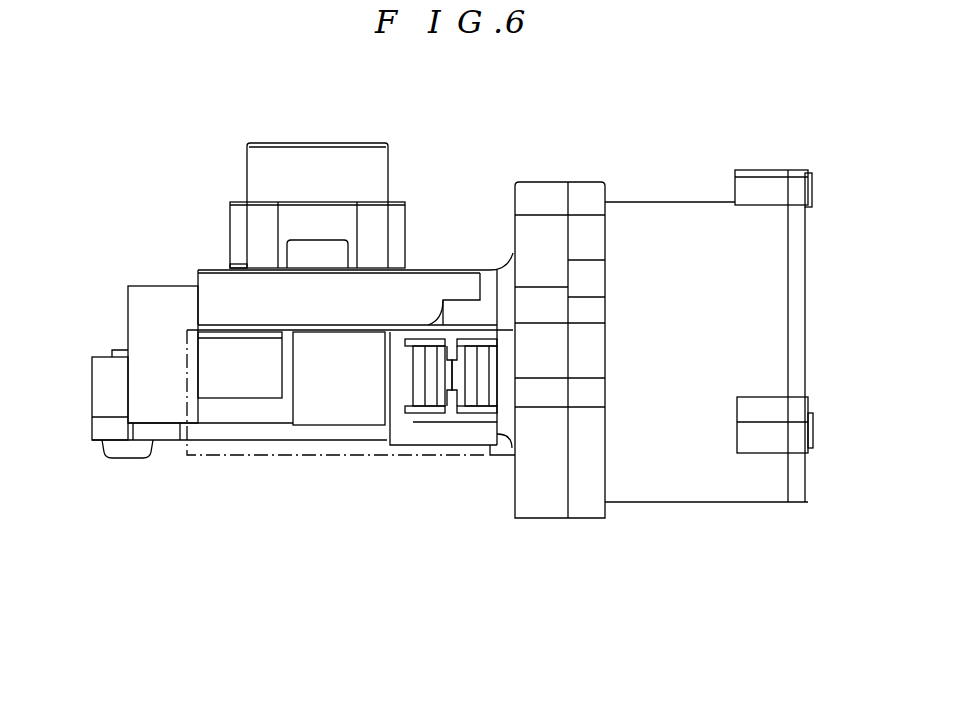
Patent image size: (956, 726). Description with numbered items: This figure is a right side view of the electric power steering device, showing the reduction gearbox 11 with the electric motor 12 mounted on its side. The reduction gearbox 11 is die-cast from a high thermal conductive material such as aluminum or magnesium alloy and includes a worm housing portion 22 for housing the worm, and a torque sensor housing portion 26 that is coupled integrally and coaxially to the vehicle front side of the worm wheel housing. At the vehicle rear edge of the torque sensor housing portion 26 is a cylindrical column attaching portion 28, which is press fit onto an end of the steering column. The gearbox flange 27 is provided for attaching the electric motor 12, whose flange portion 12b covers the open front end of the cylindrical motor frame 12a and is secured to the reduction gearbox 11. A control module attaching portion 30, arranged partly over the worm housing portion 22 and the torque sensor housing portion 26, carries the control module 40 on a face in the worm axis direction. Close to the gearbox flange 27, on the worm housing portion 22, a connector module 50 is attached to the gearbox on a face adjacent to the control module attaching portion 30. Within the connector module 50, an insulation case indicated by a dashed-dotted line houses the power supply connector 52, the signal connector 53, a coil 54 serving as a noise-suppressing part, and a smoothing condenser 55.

The reduction gearbox 11 is at (127, 332).
The electric motor 12 is at (676, 197).
The motor frame 12a is at (706, 533).
The flange portion 12b is at (585, 387).
The worm housing portion 22 is at (126, 353).
The torque sensor housing portion 26 is at (355, 233).
The gearbox flange 27 is at (560, 387).
The column attaching portion 28 is at (354, 170).
The control module attaching portion 30 is at (219, 233).
The control module 40 is at (195, 300).
The connector module 50 is at (293, 456).
The power supply connector 52 is at (339, 432).
The signal connector 53 is at (240, 432).
The coil 54 is at (477, 436).
The smoothing condenser 55 is at (452, 432).